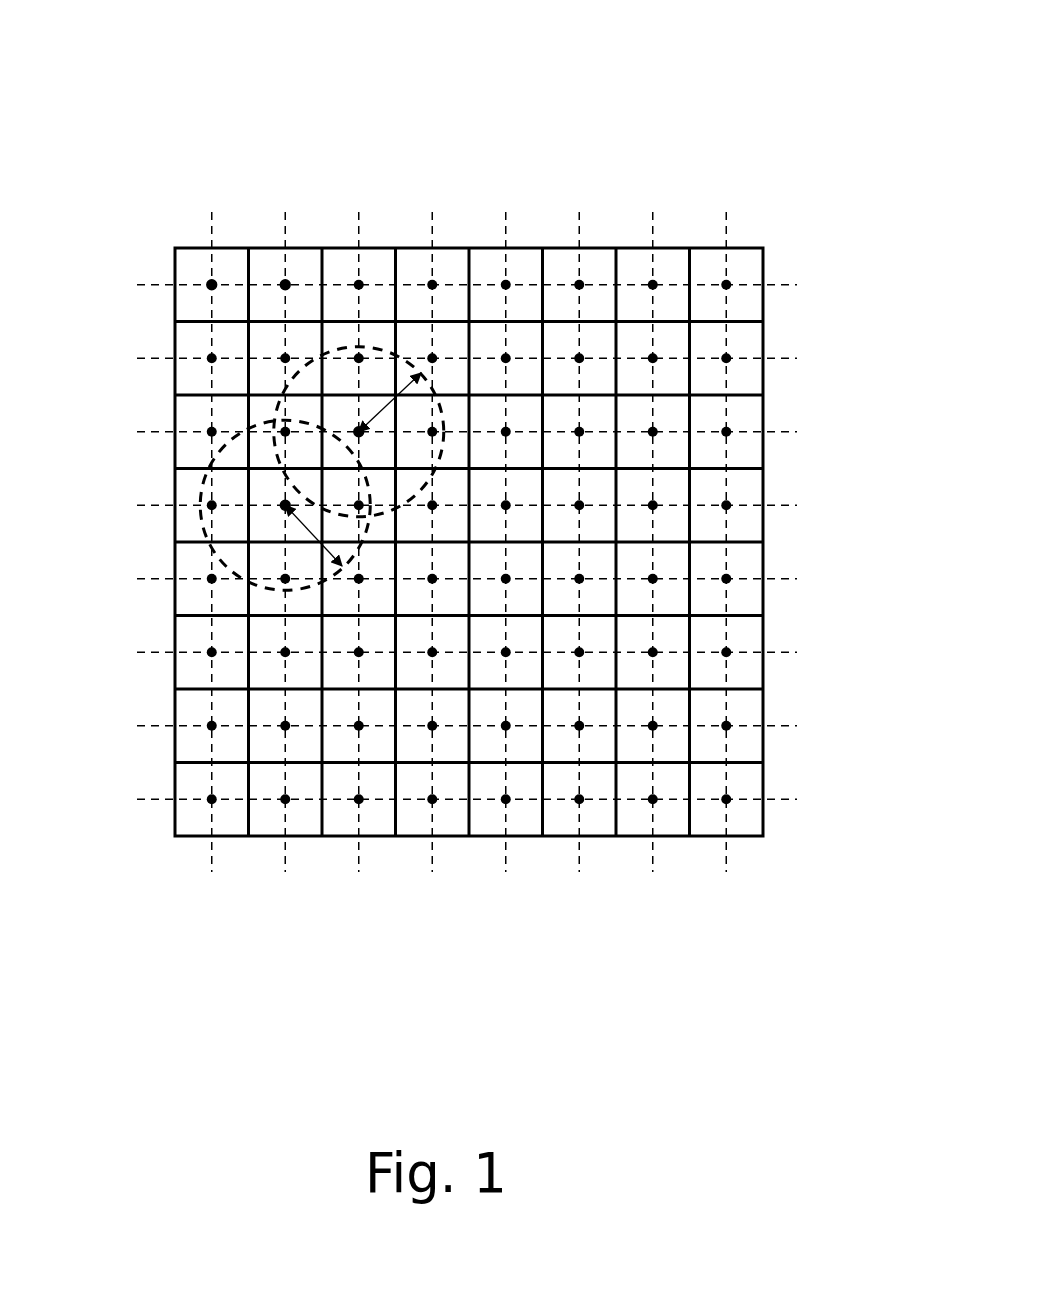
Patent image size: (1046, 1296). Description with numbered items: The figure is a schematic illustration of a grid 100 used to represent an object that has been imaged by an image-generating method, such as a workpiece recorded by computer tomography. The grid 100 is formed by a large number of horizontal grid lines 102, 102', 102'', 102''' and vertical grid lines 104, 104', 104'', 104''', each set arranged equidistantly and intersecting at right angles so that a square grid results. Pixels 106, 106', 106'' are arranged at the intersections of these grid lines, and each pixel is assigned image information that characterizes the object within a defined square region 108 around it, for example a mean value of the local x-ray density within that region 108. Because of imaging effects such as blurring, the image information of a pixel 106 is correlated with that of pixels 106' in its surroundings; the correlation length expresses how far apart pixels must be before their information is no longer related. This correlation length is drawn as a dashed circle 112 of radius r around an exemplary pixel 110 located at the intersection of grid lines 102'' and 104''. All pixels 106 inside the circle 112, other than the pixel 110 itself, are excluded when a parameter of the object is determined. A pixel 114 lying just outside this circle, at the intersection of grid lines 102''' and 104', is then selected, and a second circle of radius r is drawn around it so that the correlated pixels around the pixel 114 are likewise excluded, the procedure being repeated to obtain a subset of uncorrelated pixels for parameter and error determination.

The grid 100 is at (664, 76).
The horizontal grid lines 102 is at (503, 237).
The horizontal grid line 102' is at (506, 310).
The horizontal grid line 102'' is at (509, 384).
The horizontal grid line 102''' is at (512, 604).
The vertical grid lines 104 is at (187, 585).
The vertical grid line 104' is at (262, 585).
The vertical grid line 104'' is at (340, 585).
The vertical grid line 104''' is at (555, 585).
The pixels 106 is at (242, 198).
The pixels in the surroundings 106' is at (332, 193).
The pixel 106'' is at (469, 448).
The region around a pixel 108 is at (190, 248).
The exemplary pixel 110 is at (359, 432).
The circle 112 is at (277, 408).
The pixel 114 is at (285, 505).